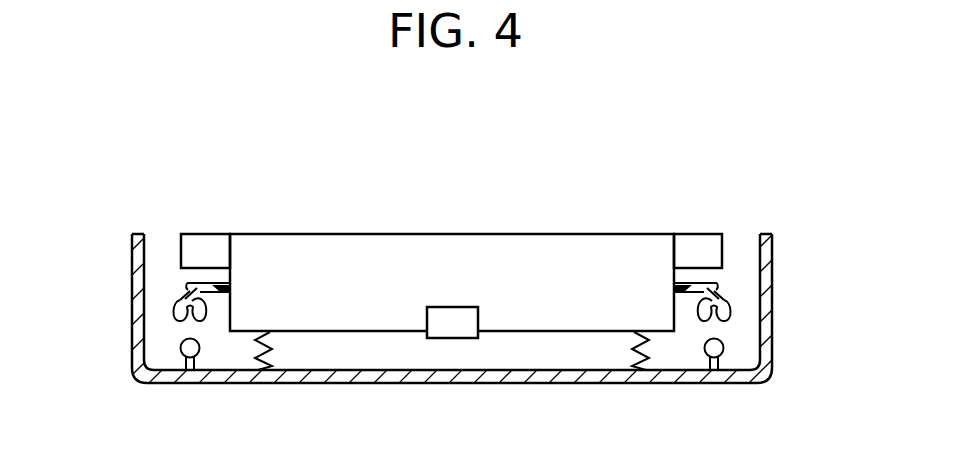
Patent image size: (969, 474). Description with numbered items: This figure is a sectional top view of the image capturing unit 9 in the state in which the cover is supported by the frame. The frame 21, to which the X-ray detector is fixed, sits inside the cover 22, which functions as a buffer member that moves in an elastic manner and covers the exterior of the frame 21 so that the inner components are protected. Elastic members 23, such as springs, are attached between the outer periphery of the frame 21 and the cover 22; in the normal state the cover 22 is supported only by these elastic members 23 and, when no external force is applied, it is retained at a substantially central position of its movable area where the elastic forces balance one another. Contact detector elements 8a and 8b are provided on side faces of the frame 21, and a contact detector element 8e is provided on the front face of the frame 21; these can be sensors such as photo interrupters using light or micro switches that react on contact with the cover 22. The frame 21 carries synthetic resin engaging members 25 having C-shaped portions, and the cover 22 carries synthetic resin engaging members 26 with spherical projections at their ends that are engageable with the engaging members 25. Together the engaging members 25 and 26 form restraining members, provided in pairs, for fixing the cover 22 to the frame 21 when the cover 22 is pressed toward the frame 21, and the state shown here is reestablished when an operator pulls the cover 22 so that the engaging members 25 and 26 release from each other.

The image capturing unit 9 is at (753, 163).
The frame 21 is at (599, 243).
The cover 22 is at (768, 325).
The elastic members 23 is at (262, 337).
The engaging members 25 is at (177, 313).
The engaging members 26 is at (192, 350).
The contact detector element 8a is at (207, 243).
The contact detector element 8b is at (698, 243).
The contact detector element 8e is at (452, 331).